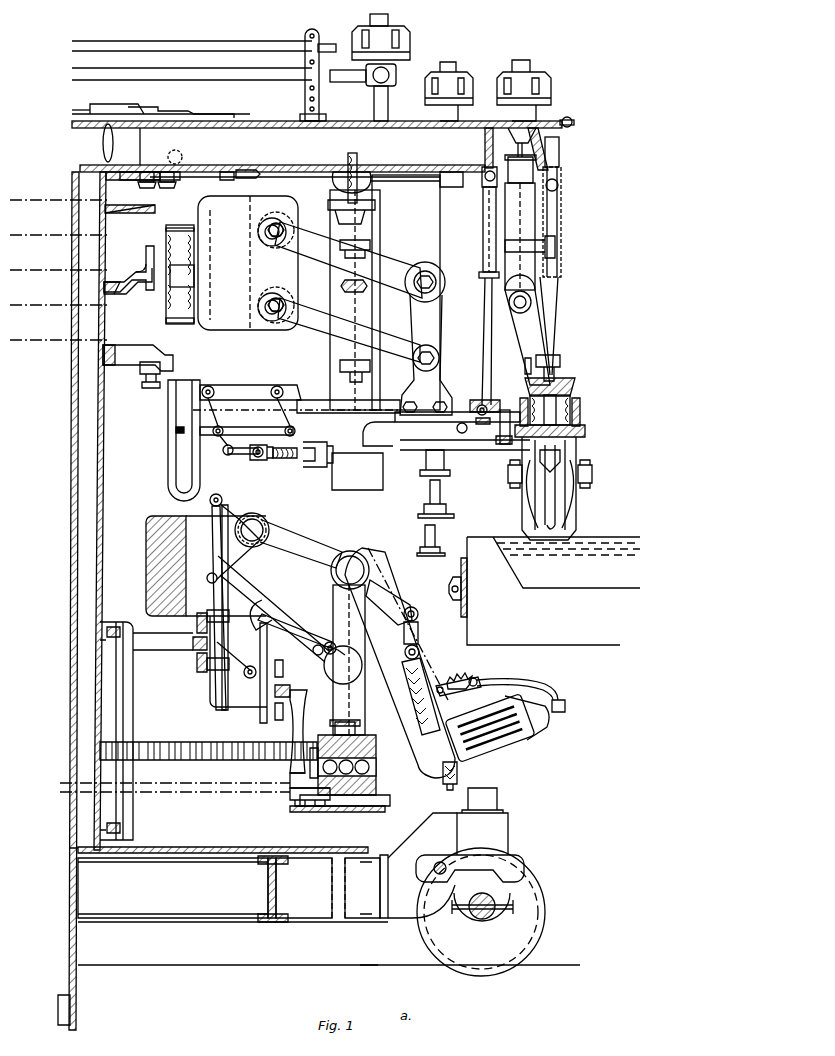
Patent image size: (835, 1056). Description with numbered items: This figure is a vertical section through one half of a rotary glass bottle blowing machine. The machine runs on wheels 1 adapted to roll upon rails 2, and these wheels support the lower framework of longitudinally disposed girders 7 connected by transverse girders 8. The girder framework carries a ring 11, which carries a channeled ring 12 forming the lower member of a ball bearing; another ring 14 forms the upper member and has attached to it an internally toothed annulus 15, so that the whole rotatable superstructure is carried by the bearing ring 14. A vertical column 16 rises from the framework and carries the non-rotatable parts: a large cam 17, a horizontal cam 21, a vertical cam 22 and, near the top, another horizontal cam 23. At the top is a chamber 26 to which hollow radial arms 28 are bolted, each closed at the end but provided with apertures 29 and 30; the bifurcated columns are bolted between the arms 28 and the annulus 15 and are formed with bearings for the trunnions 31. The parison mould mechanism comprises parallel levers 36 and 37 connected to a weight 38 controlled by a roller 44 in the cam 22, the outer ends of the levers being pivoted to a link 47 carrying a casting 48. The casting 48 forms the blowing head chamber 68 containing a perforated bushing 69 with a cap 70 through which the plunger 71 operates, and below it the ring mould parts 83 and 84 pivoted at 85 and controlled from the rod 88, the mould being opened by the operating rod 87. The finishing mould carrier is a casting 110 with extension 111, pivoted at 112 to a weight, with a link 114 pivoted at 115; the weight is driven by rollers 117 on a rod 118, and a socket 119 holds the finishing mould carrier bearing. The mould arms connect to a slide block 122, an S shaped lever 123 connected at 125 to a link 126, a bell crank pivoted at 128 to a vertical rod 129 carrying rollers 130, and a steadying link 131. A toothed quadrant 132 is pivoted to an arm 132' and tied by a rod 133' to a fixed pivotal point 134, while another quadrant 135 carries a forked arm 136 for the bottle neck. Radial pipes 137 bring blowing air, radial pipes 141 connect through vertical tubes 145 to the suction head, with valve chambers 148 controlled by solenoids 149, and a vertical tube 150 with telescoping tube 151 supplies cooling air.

The wheels 1 is at (545, 892).
The rails 2 is at (376, 963).
The longitudinally disposed girders 7 is at (223, 882).
The transverse girders 8 is at (270, 884).
The ring 11 is at (390, 800).
The channeled ring 12 is at (378, 782).
The ring 14 is at (433, 777).
The internally toothed annulus 15 is at (376, 750).
The vertical column 16 is at (100, 486).
The large cam 17 is at (193, 645).
The horizontal cam 21 is at (158, 368).
The vertical cam 22 is at (153, 274).
The horizontal cam 23 is at (158, 208).
The chamber 26 is at (317, 134).
The hollow arm 28 is at (314, 158).
The aperture 29 is at (358, 165).
The aperture 30 is at (558, 146).
The trunnions 31 is at (340, 556).
The lever 36 is at (394, 262).
The lever 37 is at (390, 338).
The weight 38 is at (248, 263).
The roller 44 is at (158, 300).
The link 47 is at (430, 328).
The casting 48 is at (288, 390).
The chamber 68 is at (572, 415).
The bushing 69 is at (556, 429).
The cap 70 is at (562, 388).
The plunger 71 is at (565, 408).
The ring mould part 83 is at (497, 440).
The ring mould part 84 is at (490, 436).
The pivot 85 is at (498, 435).
The operating rod 87 is at (486, 344).
The rod 88 is at (486, 404).
The casting 110 is at (340, 600).
The extension 111 is at (301, 544).
The pivot 112 is at (262, 524).
The link 114 is at (320, 658).
The pivot 115 is at (275, 607).
The rollers 117 is at (290, 725).
The rod 118 is at (260, 688).
The socket 119 is at (378, 770).
The slide block 122 is at (420, 650).
The S shaped lever 123 is at (395, 602).
The connection 125 is at (300, 628).
The link 126 is at (232, 592).
The pivot 128 is at (222, 500).
The vertical rod 129 is at (216, 560).
The rollers 130 is at (202, 612).
The link 131 is at (224, 645).
The toothed quadrant 132 is at (458, 668).
The arm 132' is at (490, 726).
The arm 133' is at (400, 663).
The fixed pivotal point 134 is at (372, 550).
The toothed quadrant 135 is at (478, 677).
The forked arm 136 is at (528, 680).
The radial pipes 137 is at (188, 47).
The radial pipes 141 is at (288, 78).
The vertical tubes 145 is at (388, 108).
The valve chambers 148 is at (388, 75).
The solenoids 149 is at (404, 28).
The vertical tube 150 is at (69, 587).
The tube 151 is at (54, 1010).